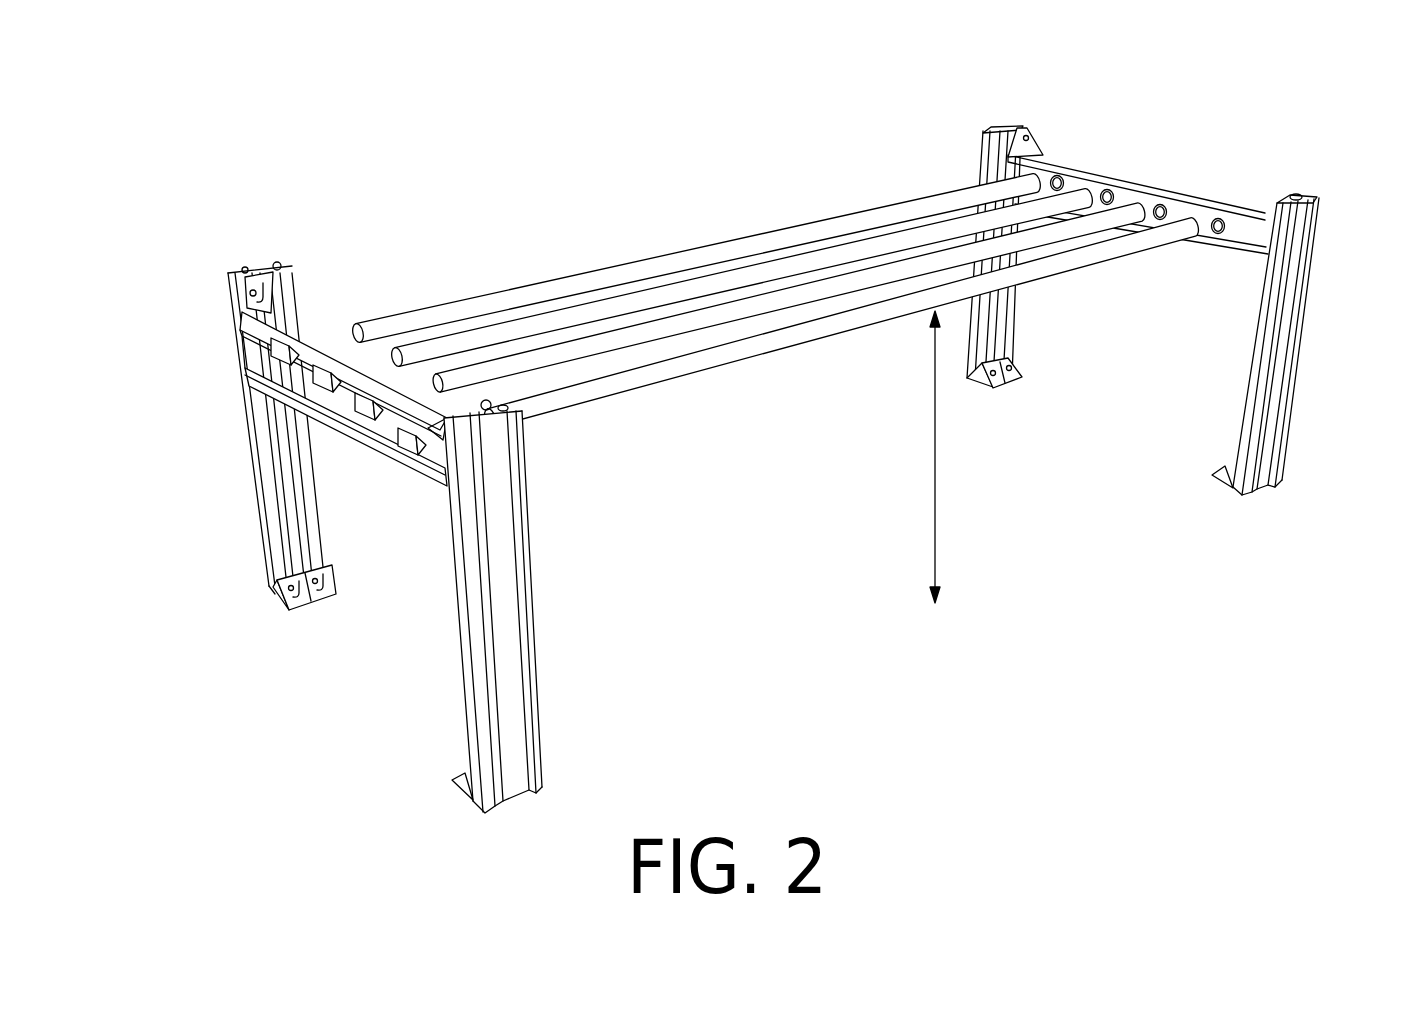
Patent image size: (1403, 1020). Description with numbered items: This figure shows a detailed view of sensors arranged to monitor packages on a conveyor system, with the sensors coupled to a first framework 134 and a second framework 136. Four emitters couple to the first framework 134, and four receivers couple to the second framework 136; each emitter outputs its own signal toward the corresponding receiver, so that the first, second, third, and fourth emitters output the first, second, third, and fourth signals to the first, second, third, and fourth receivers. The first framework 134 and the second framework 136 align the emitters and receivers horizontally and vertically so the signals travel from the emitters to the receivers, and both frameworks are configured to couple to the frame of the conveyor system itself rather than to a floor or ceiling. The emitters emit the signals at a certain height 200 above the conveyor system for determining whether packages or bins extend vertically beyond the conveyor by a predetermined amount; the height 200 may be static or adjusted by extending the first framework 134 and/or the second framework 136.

The first framework 134 is at (541, 606).
The second framework 136 is at (1234, 344).
The height 200 is at (974, 457).